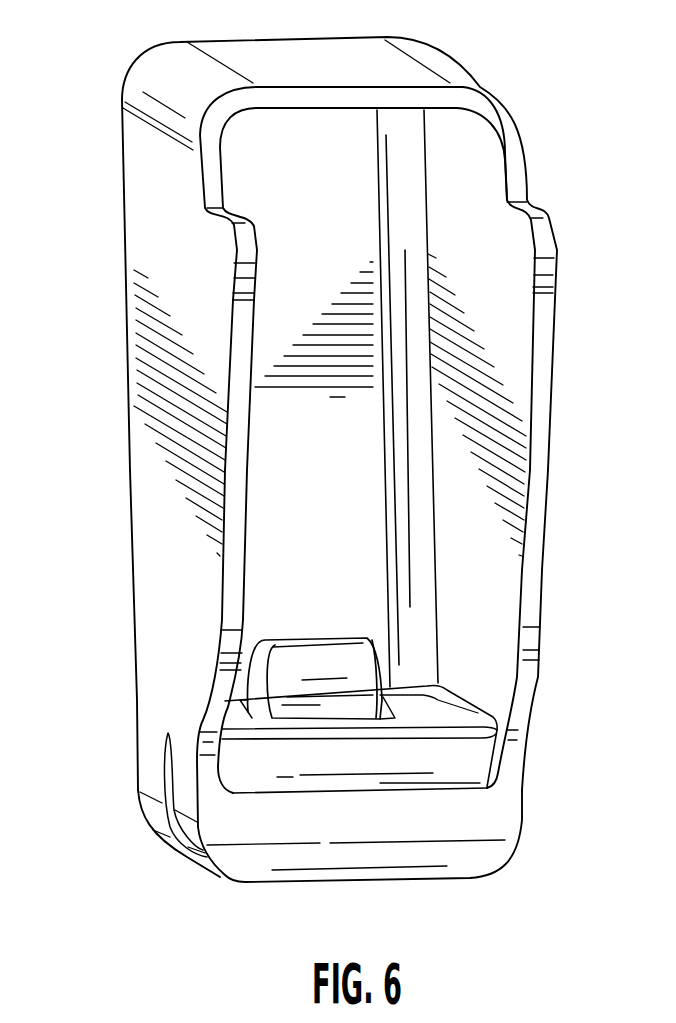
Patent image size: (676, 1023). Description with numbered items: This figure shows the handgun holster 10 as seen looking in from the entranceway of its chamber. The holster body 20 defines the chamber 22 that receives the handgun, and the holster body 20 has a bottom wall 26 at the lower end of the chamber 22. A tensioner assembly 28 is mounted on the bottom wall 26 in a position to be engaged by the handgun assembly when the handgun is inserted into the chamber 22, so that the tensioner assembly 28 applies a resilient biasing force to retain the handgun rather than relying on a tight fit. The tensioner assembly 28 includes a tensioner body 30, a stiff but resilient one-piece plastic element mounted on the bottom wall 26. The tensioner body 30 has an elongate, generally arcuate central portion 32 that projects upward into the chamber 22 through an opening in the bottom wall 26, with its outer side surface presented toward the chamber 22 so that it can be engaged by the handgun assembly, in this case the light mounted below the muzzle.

The handgun holster 10 is at (309, 473).
The holster body 20 is at (123, 587).
The chamber 22 is at (334, 517).
The bottom wall 26 is at (475, 830).
The tensioner assembly 28 is at (411, 711).
The tensioner body 30 is at (392, 667).
The central portion 32 is at (343, 638).